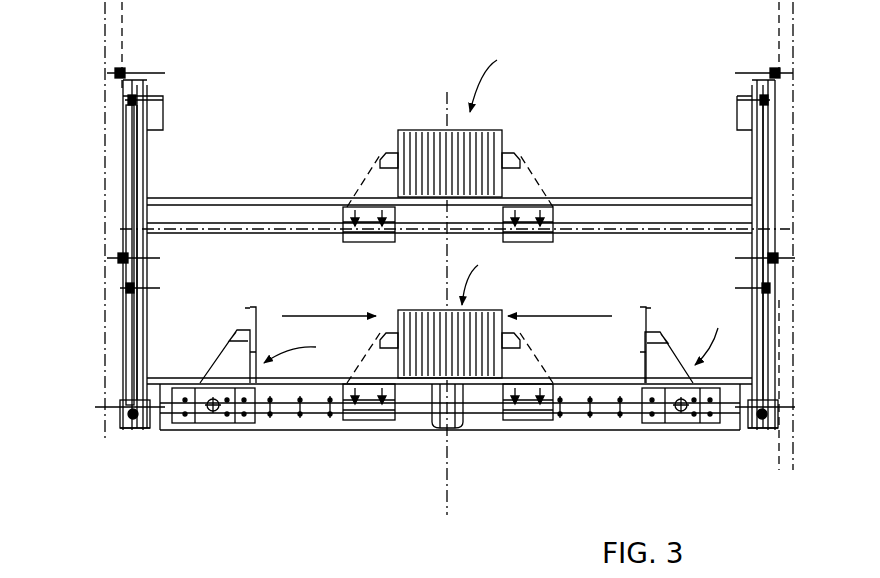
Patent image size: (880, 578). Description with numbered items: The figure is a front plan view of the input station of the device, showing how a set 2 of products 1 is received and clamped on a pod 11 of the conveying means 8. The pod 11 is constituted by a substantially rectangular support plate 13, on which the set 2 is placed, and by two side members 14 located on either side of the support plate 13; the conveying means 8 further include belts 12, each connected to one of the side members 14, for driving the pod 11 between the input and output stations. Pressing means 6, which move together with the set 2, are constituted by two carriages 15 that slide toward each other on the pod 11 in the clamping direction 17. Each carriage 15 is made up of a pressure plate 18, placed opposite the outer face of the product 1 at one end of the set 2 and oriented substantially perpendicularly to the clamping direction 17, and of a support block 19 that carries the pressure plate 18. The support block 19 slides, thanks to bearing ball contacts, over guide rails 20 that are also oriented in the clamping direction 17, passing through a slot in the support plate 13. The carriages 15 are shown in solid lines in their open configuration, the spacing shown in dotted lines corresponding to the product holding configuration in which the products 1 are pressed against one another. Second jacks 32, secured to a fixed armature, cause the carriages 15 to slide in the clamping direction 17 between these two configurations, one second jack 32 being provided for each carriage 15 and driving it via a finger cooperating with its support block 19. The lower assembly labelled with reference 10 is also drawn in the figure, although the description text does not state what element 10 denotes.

The product 1 is at (428, 135).
The set 2 is at (489, 172).
The pressing means 6 is at (220, 330).
The conveying means 8 is at (97, 378).
The carriage 10 is at (405, 450).
The pod 11 is at (122, 330).
The belt 12 is at (107, 415).
The support plate 13 is at (162, 383).
The side member 14 is at (128, 365).
The carriage 15 is at (506, 334).
The clamping direction 17 is at (340, 316).
The pressure plate 18 is at (252, 312).
The support block 19 is at (345, 215).
The guide rail 20 is at (633, 225).
The second jack 32 is at (178, 430).